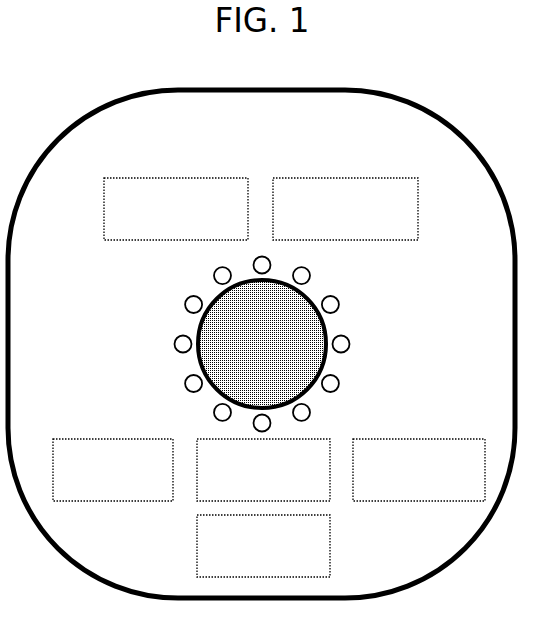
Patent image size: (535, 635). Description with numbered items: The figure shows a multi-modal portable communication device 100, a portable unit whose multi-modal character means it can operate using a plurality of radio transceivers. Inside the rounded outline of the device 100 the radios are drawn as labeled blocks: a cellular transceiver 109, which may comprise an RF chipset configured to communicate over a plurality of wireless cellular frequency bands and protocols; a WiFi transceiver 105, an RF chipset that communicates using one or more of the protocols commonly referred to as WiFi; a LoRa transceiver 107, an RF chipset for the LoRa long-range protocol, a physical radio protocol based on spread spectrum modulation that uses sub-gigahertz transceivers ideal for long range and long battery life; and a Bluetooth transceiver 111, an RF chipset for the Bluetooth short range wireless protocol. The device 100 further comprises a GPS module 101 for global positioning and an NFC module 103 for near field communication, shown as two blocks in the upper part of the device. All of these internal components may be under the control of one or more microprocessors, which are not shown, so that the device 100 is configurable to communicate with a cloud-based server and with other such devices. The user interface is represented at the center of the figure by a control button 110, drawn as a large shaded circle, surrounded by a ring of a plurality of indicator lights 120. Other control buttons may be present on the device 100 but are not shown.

The multi-modal portable communication device 100 is at (244, 131).
The GPS module 101 is at (160, 230).
The NFC module 103 is at (329, 230).
The WiFi transceiver 105 is at (96, 493).
The LoRa transceiver 107 is at (402, 493).
The cellular transceiver 109 is at (246, 493).
The control button 110 is at (246, 353).
The Bluetooth transceiver 111 is at (248, 568).
The indicator lights 120 is at (181, 334).